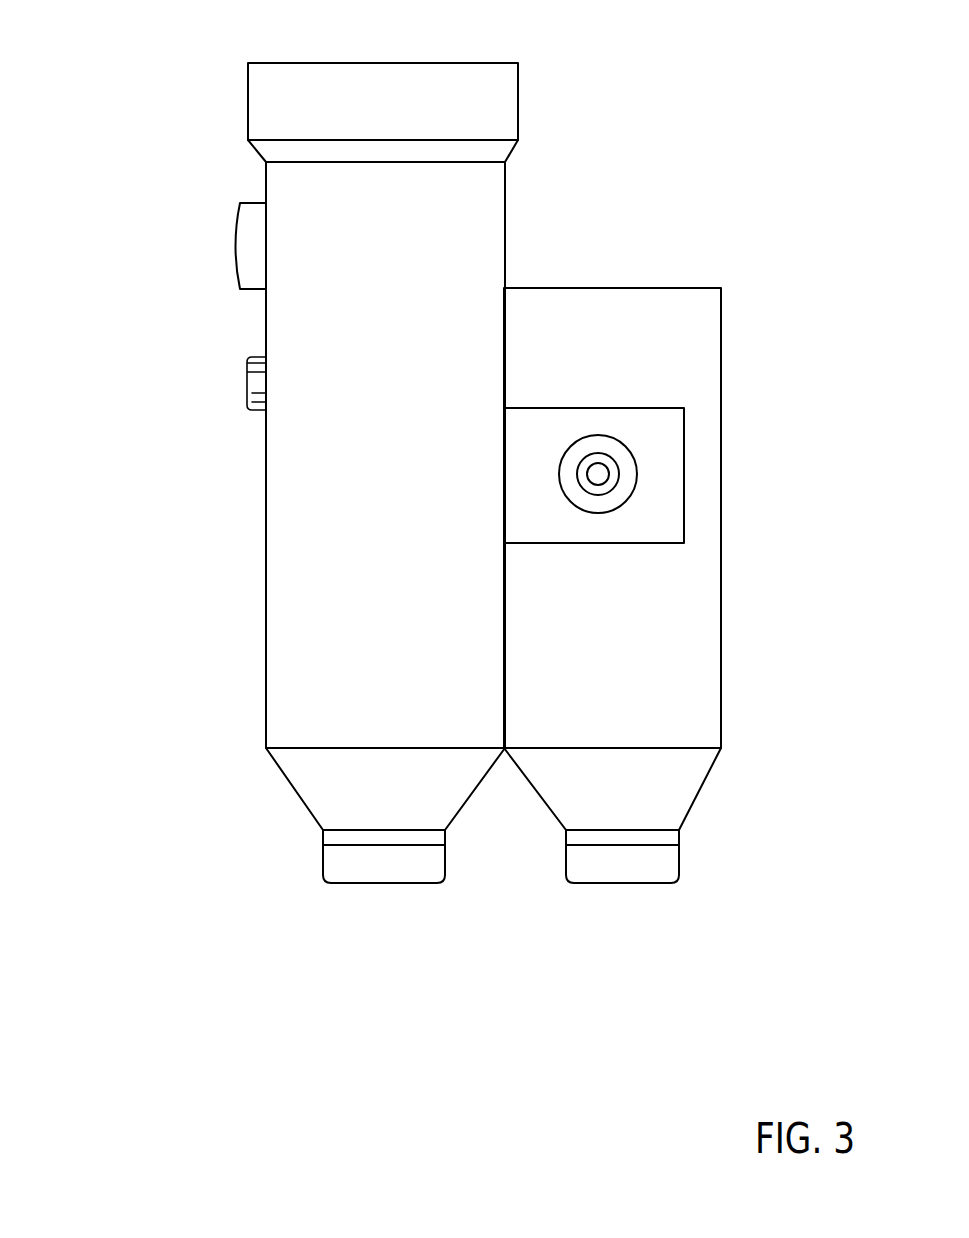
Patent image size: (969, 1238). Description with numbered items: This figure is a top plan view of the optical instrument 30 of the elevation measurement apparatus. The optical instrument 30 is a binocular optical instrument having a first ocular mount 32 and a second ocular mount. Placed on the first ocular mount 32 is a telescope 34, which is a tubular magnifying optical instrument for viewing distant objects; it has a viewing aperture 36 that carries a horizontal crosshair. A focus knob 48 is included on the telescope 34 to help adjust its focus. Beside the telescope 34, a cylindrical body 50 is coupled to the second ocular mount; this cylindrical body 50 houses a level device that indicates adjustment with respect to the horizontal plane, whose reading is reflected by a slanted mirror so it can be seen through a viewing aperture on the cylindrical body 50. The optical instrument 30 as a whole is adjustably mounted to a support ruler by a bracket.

The optical instrument 30 is at (132, 76).
The first ocular mount 32 is at (393, 897).
The telescope 34 is at (657, 897).
The viewing aperture 36 is at (512, 100).
The focus knob 48 is at (233, 238).
The cylindrical body 50 is at (722, 504).